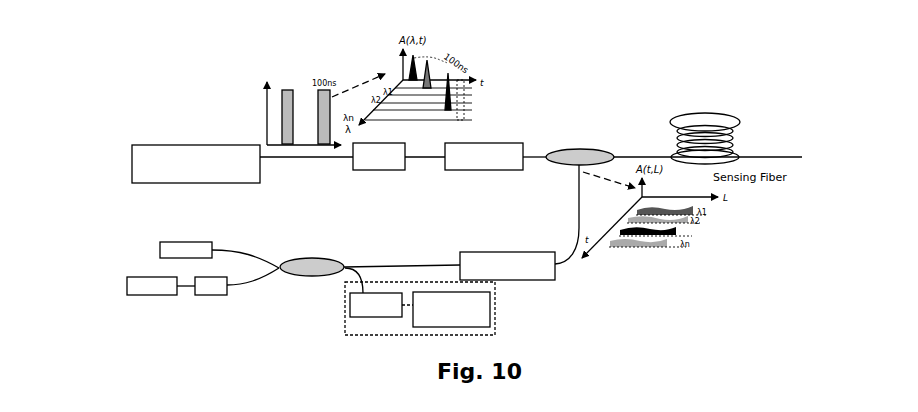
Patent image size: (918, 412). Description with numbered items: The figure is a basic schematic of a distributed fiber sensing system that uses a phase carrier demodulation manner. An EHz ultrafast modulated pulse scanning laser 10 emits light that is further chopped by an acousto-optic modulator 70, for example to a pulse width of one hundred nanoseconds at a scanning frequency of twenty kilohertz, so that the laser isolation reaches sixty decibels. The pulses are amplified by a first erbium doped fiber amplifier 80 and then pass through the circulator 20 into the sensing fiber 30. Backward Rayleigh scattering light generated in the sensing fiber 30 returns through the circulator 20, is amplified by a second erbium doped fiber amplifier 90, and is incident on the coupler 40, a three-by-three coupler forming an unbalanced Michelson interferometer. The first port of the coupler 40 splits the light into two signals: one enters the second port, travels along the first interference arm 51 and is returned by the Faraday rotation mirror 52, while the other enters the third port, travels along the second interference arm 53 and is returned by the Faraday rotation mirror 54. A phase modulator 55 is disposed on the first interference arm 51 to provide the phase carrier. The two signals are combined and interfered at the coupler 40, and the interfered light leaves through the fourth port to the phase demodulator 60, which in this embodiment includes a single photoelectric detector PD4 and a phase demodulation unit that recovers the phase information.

The EHz ultrafast modulated pulse scanning laser 10 is at (188, 145).
The circulator 20 is at (575, 150).
The sensing fiber 30 is at (785, 155).
The coupler 40 is at (298, 258).
The first interference arm 51 is at (248, 282).
The Faraday rotation mirror 52 is at (150, 295).
The second interference arm 53 is at (255, 252).
The Faraday rotation mirror 54 is at (178, 242).
The phase modulator 55 is at (210, 295).
The phase demodulator 60 is at (490, 308).
The acousto-optic modulator 70 is at (380, 170).
The first erbium doped fiber amplifier 80 is at (482, 170).
The second erbium doped fiber amplifier 90 is at (508, 252).